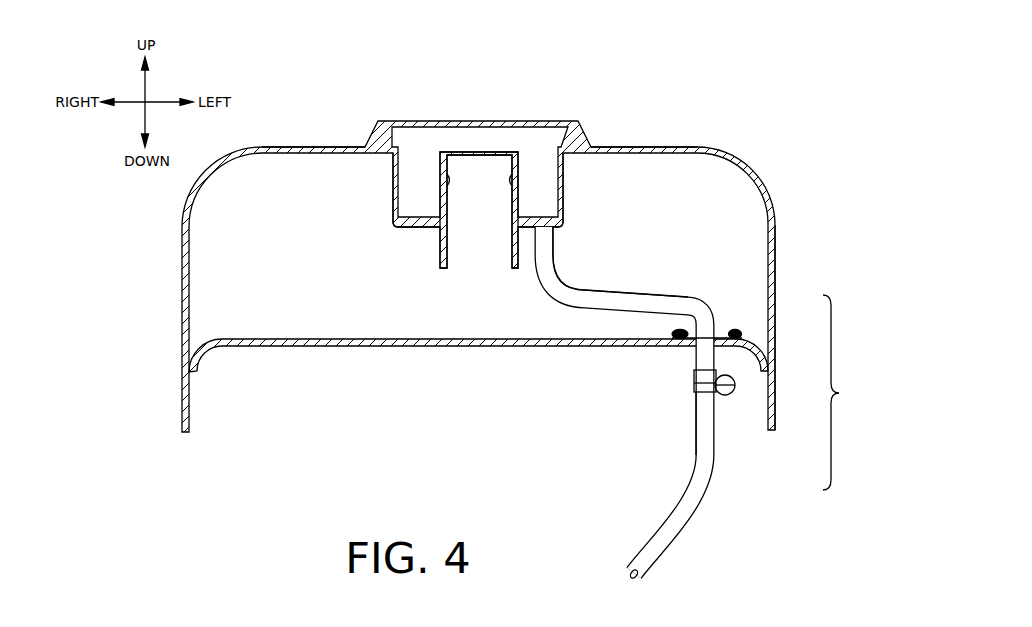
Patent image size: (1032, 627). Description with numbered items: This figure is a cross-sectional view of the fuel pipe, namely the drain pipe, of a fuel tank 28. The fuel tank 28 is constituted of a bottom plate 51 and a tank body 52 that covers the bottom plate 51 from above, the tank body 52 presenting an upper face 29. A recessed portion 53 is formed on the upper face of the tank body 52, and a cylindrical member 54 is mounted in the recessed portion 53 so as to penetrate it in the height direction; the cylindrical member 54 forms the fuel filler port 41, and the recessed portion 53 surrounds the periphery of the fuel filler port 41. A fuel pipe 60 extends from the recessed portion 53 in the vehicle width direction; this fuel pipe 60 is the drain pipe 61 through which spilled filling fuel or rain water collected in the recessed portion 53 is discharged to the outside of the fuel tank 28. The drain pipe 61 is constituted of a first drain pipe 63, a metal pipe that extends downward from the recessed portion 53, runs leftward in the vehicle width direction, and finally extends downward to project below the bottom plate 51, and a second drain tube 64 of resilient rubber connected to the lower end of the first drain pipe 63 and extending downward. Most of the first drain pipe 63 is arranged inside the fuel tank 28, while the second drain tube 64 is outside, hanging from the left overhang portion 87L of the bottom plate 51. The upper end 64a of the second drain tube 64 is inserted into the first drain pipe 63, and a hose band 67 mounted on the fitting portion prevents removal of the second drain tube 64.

The fuel tank 28 is at (757, 176).
The upper face 29 is at (623, 146).
The tank body 52 is at (773, 216).
The recessed portion 53 is at (415, 218).
The cylindrical member 54 is at (520, 166).
The fuel filler port 41 is at (512, 164).
The bottom plate 51 is at (450, 347).
The fuel pipe 60 is at (657, 266).
The first drain pipe 63 is at (692, 300).
The second drain tube 64 is at (705, 470).
The left overhang portion 87L is at (687, 347).
The upper end of the second drain tube 64a is at (694, 374).
The hose band 67 is at (694, 391).
The drain pipe 61 is at (868, 392).